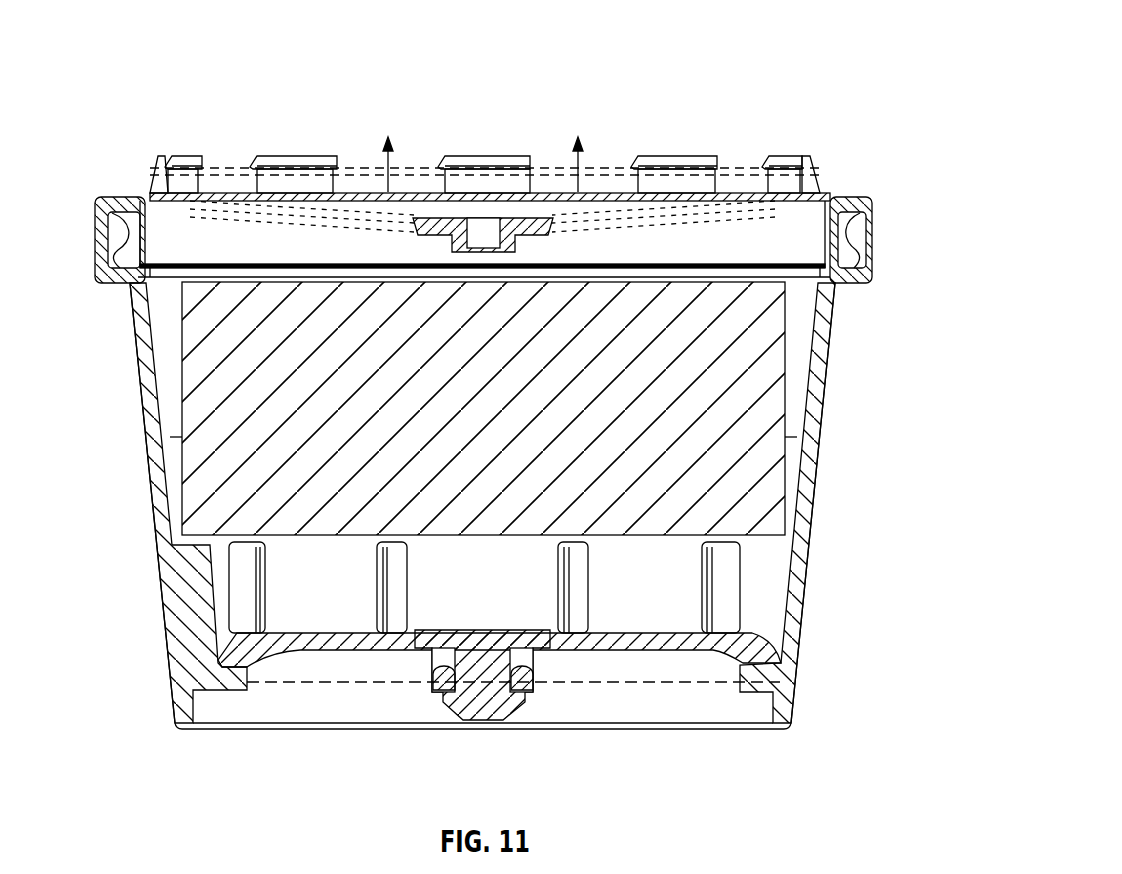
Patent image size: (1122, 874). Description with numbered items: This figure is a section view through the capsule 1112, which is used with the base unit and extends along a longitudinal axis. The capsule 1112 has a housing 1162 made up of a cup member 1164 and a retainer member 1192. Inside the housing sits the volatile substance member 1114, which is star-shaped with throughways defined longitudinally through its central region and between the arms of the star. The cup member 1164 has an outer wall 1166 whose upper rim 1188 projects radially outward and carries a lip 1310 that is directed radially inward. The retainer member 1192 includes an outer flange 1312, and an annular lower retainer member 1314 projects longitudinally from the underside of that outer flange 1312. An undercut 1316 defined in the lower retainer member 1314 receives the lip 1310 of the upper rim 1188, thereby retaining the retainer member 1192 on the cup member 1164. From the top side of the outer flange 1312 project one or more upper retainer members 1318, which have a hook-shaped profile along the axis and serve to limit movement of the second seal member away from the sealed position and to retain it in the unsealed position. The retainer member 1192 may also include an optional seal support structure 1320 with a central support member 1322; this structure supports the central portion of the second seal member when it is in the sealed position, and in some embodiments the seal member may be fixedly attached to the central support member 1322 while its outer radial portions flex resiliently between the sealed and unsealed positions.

The capsule 1112 is at (842, 48).
The lip 1310 is at (843, 214).
The outer flange 1312 is at (866, 203).
The lower retainer member 1314 is at (133, 257).
The undercut 1316 is at (97, 212).
The upper retainer members 1318 is at (178, 156).
The seal support structure 1320 is at (416, 208).
The central support member 1322 is at (448, 240).
The upper rim 1188 is at (100, 250).
The retainer member 1192 is at (852, 190).
The volatile substance member 1114 is at (772, 360).
The housing 1162 is at (830, 462).
The cup member 1164 is at (818, 526).
The outer wall 1166 is at (157, 478).